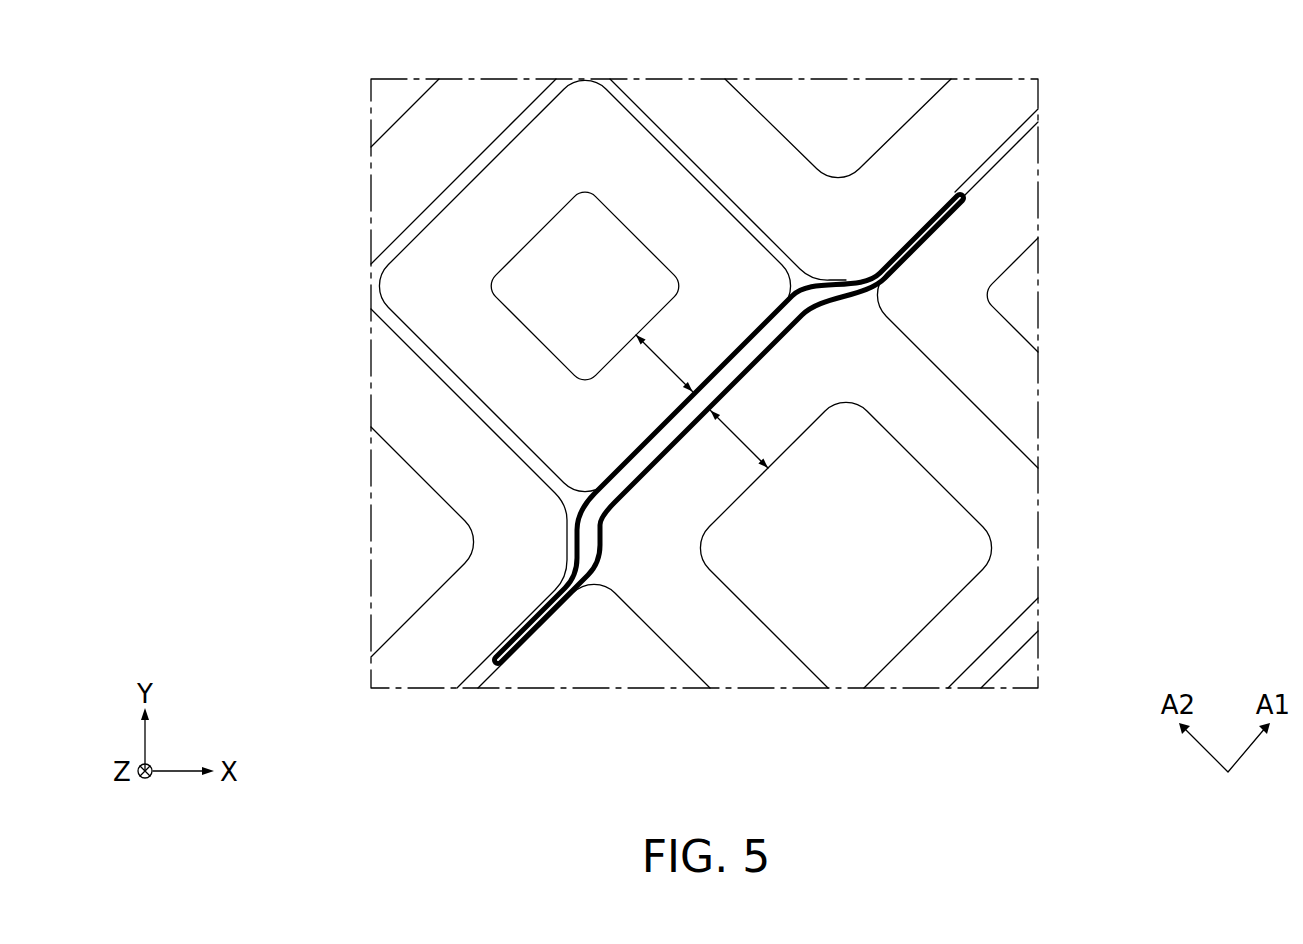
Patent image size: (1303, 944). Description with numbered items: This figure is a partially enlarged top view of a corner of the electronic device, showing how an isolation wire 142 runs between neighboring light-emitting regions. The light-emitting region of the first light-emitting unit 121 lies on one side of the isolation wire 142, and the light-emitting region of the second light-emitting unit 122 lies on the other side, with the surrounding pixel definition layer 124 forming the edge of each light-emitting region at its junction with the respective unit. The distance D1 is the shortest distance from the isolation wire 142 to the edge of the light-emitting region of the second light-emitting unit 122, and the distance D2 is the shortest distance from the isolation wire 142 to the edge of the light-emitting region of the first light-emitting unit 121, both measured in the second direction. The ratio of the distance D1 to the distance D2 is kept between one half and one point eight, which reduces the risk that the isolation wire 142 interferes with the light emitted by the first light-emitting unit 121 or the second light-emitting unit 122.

The first light-emitting unit 121 is at (943, 549).
The second light-emitting unit 122 is at (535, 282).
The pixel definition layer 124 is at (492, 210).
The isolation wire 142 is at (824, 294).
The distance D1 is at (664, 363).
The distance D2 is at (739, 439).